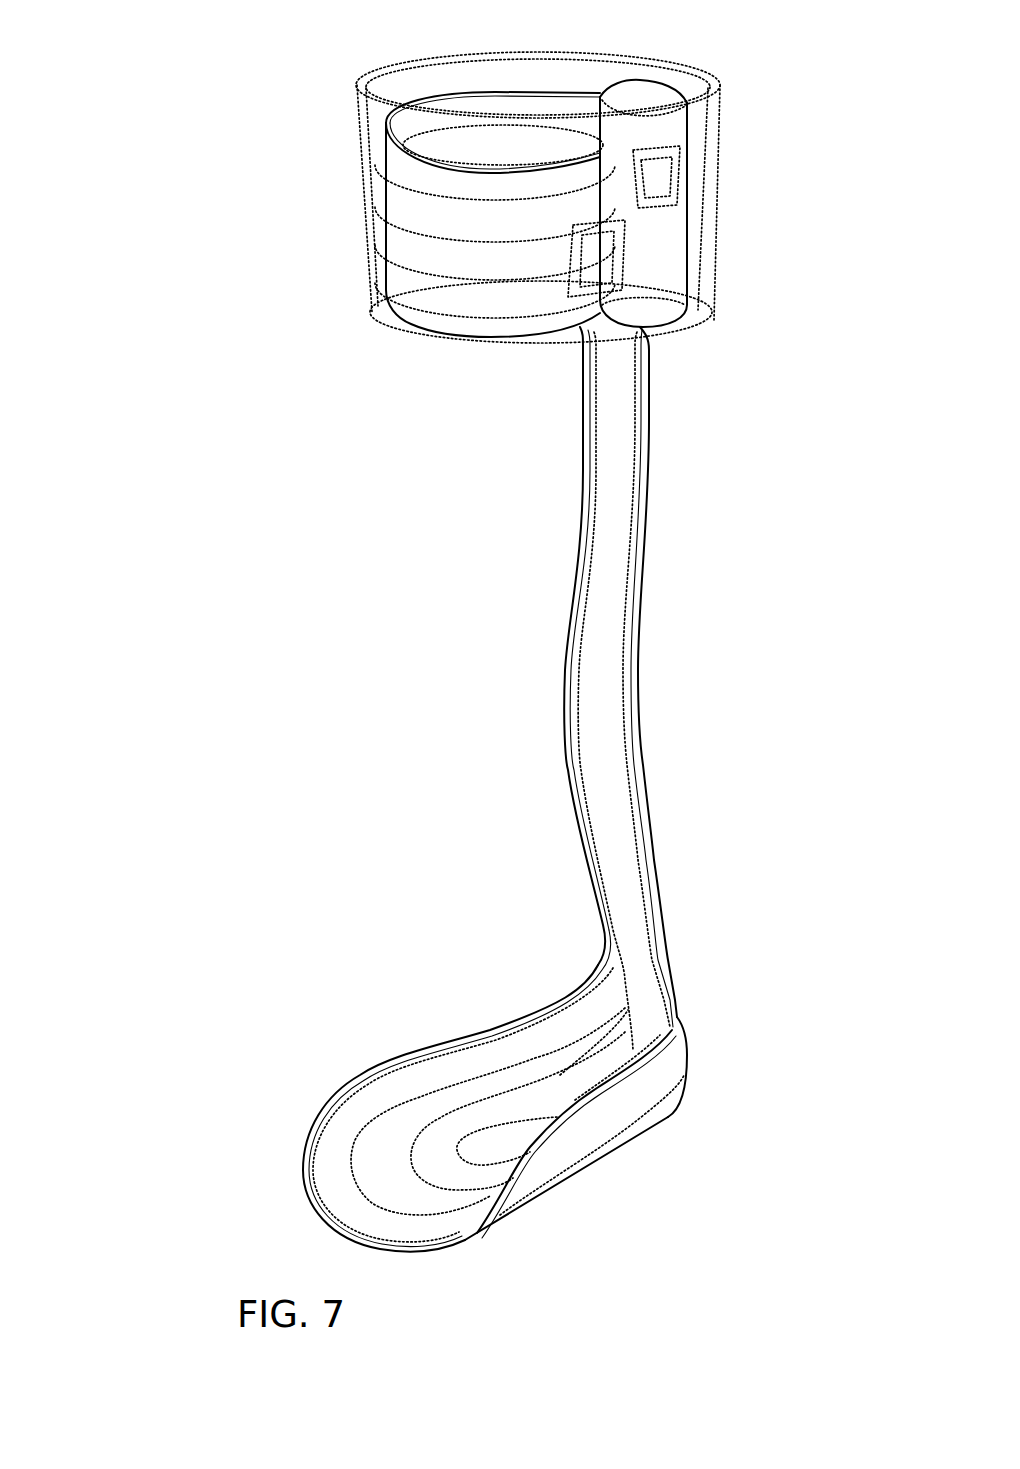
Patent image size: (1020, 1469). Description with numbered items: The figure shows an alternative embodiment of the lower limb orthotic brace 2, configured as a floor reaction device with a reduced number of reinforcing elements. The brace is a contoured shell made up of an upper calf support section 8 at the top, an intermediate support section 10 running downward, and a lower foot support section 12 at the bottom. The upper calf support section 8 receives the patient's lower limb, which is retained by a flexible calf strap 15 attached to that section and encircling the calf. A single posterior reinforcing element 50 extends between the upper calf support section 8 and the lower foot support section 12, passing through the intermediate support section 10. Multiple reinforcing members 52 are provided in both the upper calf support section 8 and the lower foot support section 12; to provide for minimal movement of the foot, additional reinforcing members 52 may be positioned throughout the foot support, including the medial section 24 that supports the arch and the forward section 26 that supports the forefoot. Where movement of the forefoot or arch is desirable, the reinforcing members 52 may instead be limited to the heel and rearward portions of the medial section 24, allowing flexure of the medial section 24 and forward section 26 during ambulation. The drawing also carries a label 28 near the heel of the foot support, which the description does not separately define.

The lower limb orthotic brace 2 is at (138, 88).
The upper calf support section 8 is at (366, 136).
The intermediate support section 10 is at (600, 482).
The lower foot support section 12 is at (352, 1123).
The flexible calf strap 15 is at (363, 78).
The medial section 24 is at (670, 1123).
The forward section 26 is at (550, 1197).
The heel 28 is at (403, 1255).
The posterior reinforcing element 50 is at (628, 537).
The reinforcing members 52 is at (400, 180).